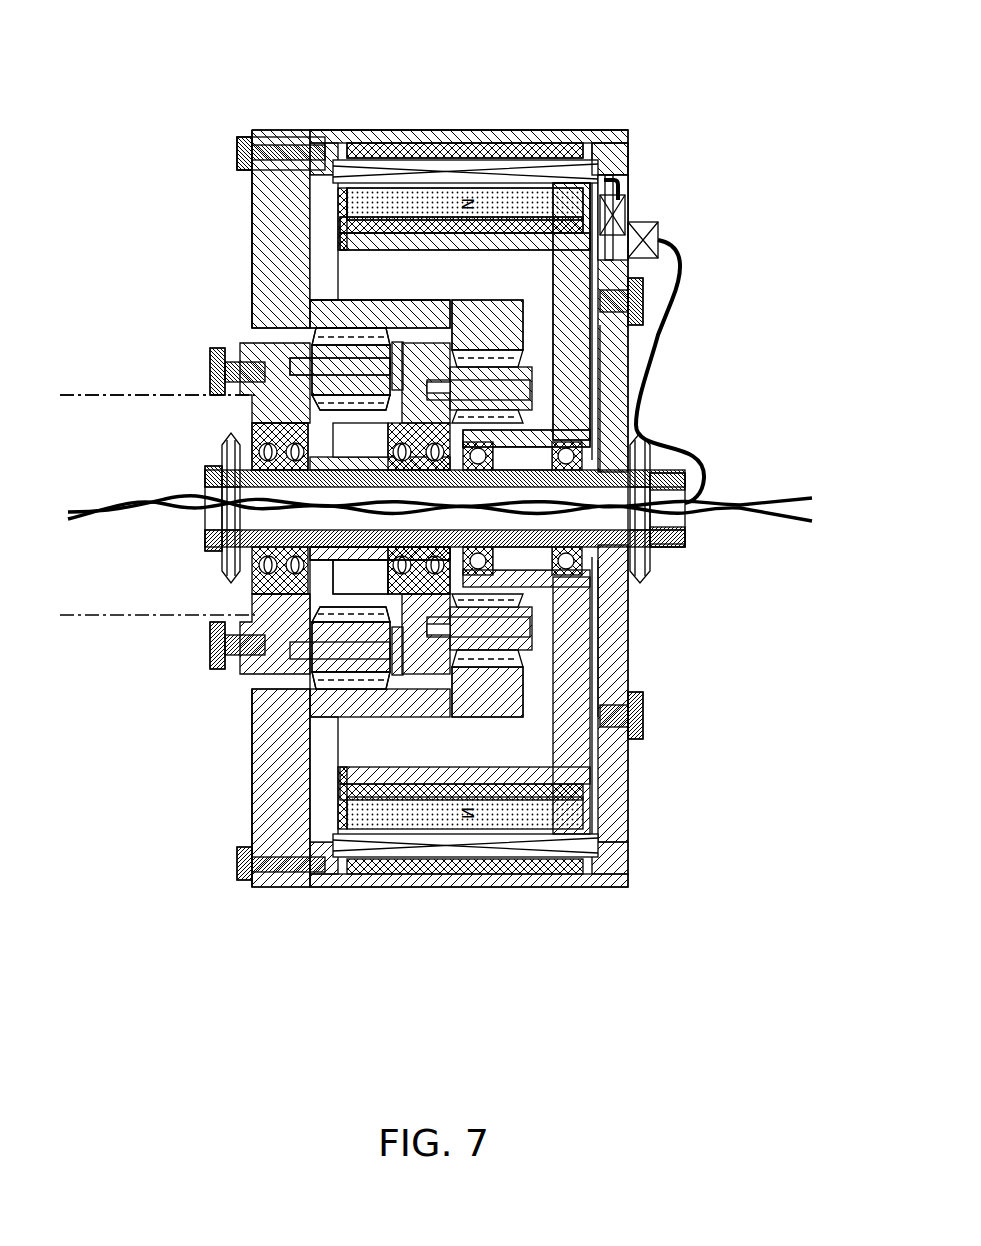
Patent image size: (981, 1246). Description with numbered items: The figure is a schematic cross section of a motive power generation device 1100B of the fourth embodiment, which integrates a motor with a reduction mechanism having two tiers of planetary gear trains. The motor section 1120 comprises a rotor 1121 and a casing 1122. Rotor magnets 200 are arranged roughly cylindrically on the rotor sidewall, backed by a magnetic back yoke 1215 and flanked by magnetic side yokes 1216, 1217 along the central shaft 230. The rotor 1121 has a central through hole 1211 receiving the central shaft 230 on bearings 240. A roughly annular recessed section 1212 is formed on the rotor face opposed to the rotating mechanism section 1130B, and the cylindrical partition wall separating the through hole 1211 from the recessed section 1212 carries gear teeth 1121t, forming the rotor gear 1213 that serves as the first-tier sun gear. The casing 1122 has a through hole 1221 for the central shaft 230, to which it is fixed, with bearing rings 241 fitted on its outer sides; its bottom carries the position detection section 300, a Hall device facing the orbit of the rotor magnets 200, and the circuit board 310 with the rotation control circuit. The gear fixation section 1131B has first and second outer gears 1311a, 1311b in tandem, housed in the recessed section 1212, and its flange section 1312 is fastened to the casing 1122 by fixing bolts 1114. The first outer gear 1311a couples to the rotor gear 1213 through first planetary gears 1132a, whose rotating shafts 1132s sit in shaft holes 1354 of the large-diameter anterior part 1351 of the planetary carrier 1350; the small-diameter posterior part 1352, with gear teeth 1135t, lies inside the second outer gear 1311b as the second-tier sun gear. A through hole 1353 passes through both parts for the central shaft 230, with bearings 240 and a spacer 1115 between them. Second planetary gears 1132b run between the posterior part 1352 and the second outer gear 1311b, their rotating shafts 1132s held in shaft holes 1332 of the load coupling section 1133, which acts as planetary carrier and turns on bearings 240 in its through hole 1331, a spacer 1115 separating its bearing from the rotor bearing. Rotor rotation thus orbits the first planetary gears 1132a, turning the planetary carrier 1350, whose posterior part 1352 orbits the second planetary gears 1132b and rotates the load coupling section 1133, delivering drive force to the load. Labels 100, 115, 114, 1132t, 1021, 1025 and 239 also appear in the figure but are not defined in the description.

The motive power generation device 1100B is at (205, 40).
The rotating mechanism section 1130B is at (200, 85).
The flange section 1312 is at (280, 137).
The magnetic side yoke 1217 is at (325, 140).
The rotor magnets 200 is at (404, 200).
The motor (100A,100B) 100 is at (458, 145).
The coil 115 is at (448, 160).
The magnetic back yoke 1215 is at (527, 228).
The motor section 1120 is at (655, 106).
The casing 1122 is at (600, 150).
The magnetic side yoke 1216 is at (598, 175).
The position detection section 300 is at (622, 197).
The circuit board 310 is at (642, 228).
The screw head 114 is at (237, 152).
The gear fixation section 1131B is at (235, 215).
The first outer gear 1311a is at (445, 305).
The second outer gear 1311b is at (400, 318).
The first planetary gears 1132a is at (461, 318).
The recessed section 1212 is at (543, 283).
The second planetary gears 1132b is at (318, 345).
The stator tooth tip 1132t is at (345, 330).
The rotating shafts 1132s is at (322, 405).
The axis line 1021 is at (95, 395).
The load coupling section 1133 is at (305, 368).
The fixing bolts 1114 is at (210, 375).
The rotor 1121 is at (645, 300).
The rotor gear 1213 is at (578, 392).
The gear teeth 1121t is at (612, 420).
The through hole 1211 is at (605, 437).
The through hole 1331 is at (257, 448).
The bearings 240 is at (231, 442).
The wire rope 1025 is at (160, 478).
The nut 239 is at (675, 533).
The central shaft 230 is at (665, 547).
The bearing rings 241 is at (225, 540).
The spacer 1115 is at (302, 577).
The through hole 1221 is at (608, 560).
The through hole 1353 is at (340, 585).
The shaft holes 1332 is at (262, 768).
The gear teeth 1135t is at (336, 560).
The shaft holes 1354 is at (378, 600).
The anterior part 1351 is at (345, 600).
The posterior part 1352 is at (320, 600).
The planetary carrier 1350 is at (476, 997).